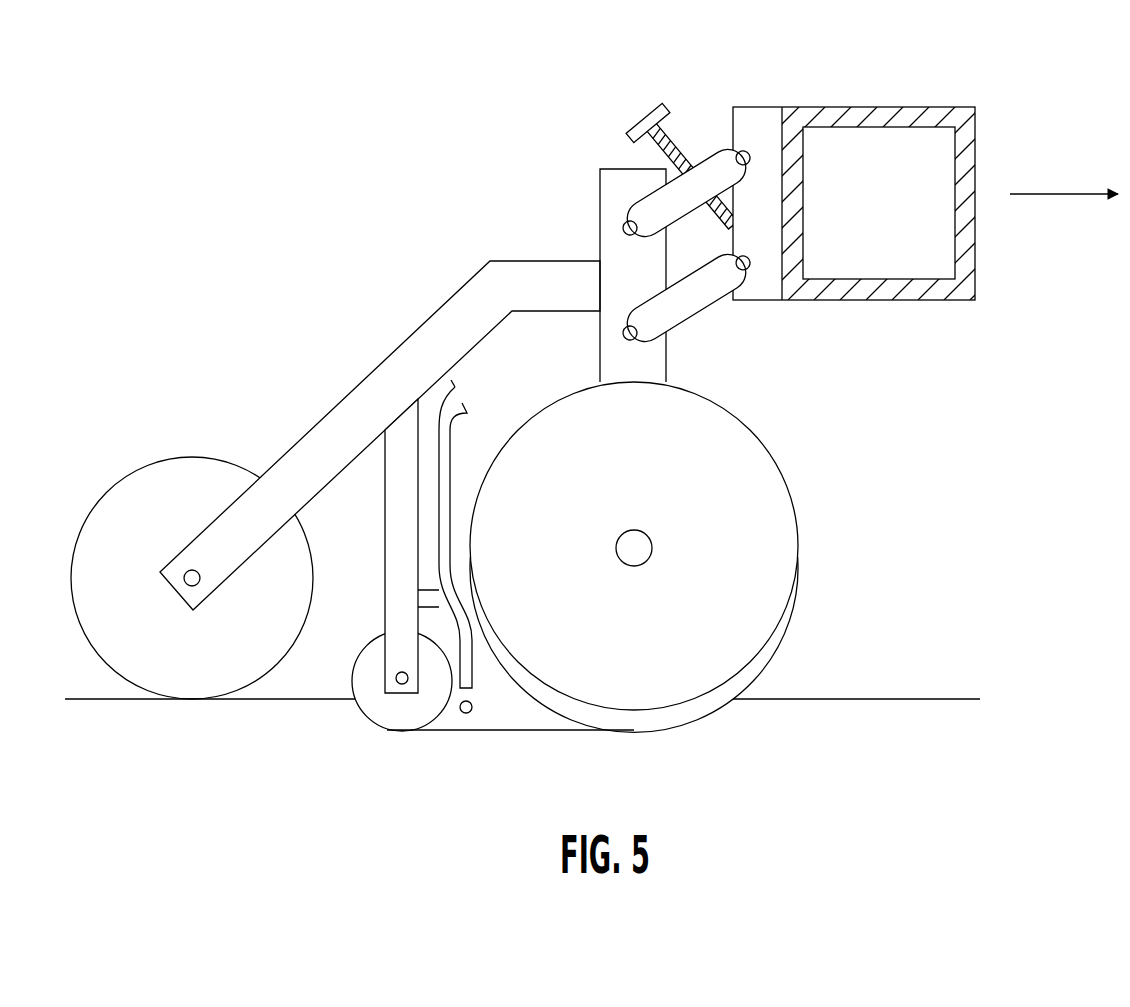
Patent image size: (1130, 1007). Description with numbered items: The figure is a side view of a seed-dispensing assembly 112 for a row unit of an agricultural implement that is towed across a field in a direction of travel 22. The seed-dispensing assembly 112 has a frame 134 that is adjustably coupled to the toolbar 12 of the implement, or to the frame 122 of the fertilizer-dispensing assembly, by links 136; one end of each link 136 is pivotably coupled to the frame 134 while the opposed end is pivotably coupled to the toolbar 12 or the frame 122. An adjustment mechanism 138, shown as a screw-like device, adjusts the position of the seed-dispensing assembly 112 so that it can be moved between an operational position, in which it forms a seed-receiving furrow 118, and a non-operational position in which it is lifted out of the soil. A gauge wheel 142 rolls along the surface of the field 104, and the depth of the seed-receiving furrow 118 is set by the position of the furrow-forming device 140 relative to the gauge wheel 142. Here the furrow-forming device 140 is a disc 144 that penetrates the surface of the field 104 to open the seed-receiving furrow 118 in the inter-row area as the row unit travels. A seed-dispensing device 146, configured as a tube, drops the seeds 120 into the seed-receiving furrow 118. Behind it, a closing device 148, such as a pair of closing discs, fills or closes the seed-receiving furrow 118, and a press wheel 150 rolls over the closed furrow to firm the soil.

The toolbar 12 is at (855, 176).
The frame of the fertilizer-dispensing assembly 122 is at (912, 107).
The direction of travel 22 is at (1054, 194).
The surface of the field 104 is at (915, 699).
The seed-dispensing assembly 112 is at (246, 176).
The seed-receiving furrow 118 is at (498, 720).
The seeds 120 is at (466, 713).
The frame 134 is at (440, 308).
The links 136 is at (633, 206).
The adjustment mechanism 138 is at (640, 108).
The furrow-forming device 140 is at (691, 557).
The gauge wheel 142 is at (794, 503).
The disc 144 is at (775, 658).
The seed-dispensing device 146 is at (443, 525).
The closing device 148 is at (367, 646).
The press wheel 150 is at (135, 470).